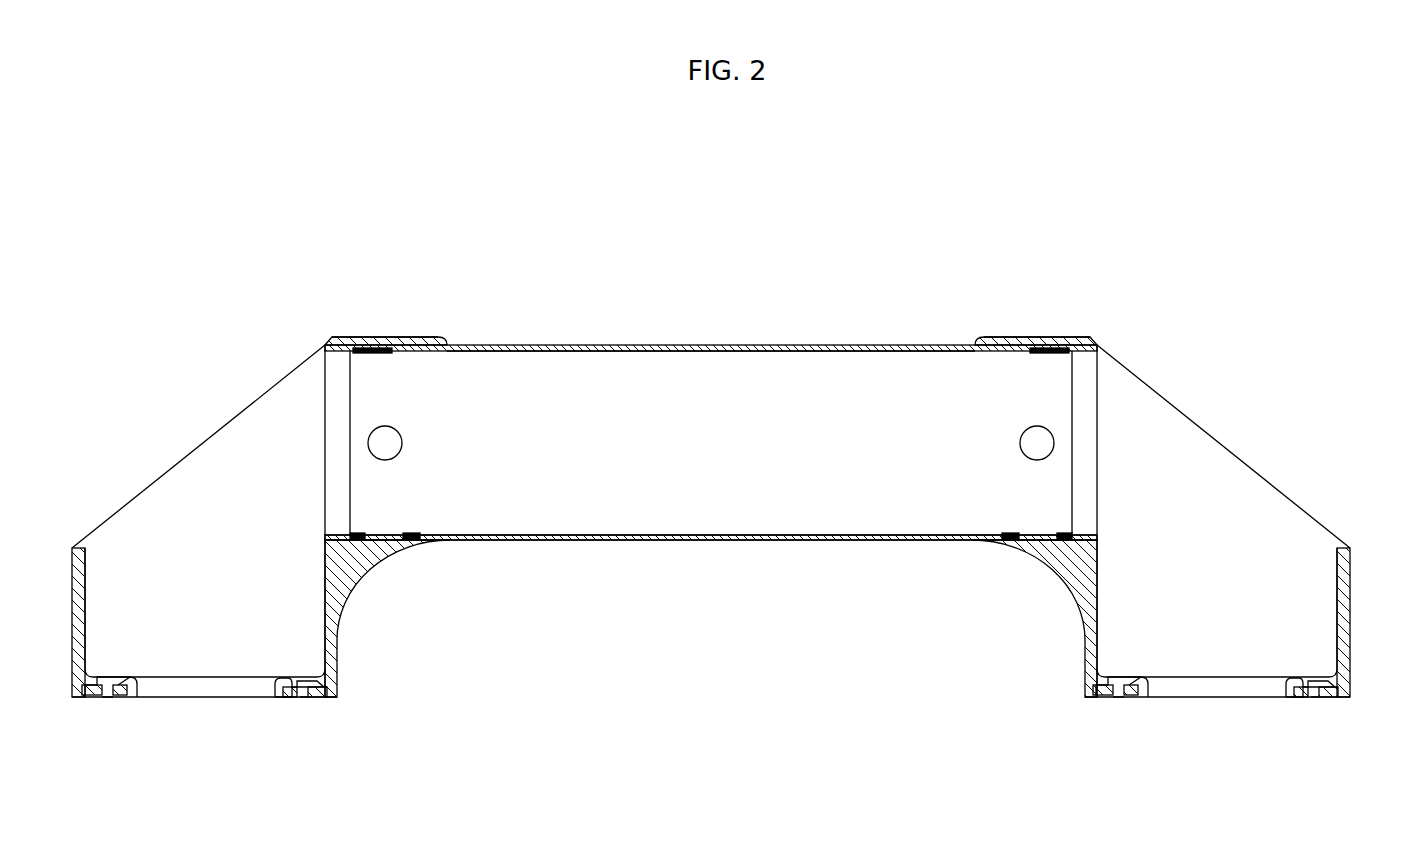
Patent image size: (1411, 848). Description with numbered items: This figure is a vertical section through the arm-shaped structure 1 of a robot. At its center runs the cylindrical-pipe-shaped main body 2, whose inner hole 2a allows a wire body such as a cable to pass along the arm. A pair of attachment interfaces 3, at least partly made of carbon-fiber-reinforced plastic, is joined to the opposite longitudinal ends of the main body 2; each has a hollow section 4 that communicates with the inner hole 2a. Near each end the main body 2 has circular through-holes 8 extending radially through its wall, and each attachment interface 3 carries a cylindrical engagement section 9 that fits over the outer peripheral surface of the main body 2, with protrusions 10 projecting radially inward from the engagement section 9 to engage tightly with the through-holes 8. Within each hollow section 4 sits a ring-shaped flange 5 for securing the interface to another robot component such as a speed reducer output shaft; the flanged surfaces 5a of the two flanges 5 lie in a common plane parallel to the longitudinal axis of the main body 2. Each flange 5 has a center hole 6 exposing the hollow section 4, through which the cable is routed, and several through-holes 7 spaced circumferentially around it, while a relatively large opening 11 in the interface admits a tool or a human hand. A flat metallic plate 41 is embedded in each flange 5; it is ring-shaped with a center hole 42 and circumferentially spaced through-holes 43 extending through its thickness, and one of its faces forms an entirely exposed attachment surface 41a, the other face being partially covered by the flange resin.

The arm-shaped structure 1 is at (583, 207).
The main body 2 is at (678, 346).
The inner hole 2a is at (735, 351).
The attachment interface 3 is at (160, 398).
The hollow section 4 is at (322, 568).
The flange 5 is at (127, 677).
The flanged surface 5a is at (122, 698).
The center hole 6 is at (280, 688).
The through-hole 7 is at (112, 680).
The through-hole 8 is at (373, 340).
The engagement section 9 is at (413, 337).
The protrusion 10 is at (388, 353).
The opening 11 is at (80, 550).
The metallic plate 41 is at (326, 700).
The attachment surface 41a is at (90, 698).
The center hole 42 is at (282, 698).
The through-hole 43 is at (107, 698).